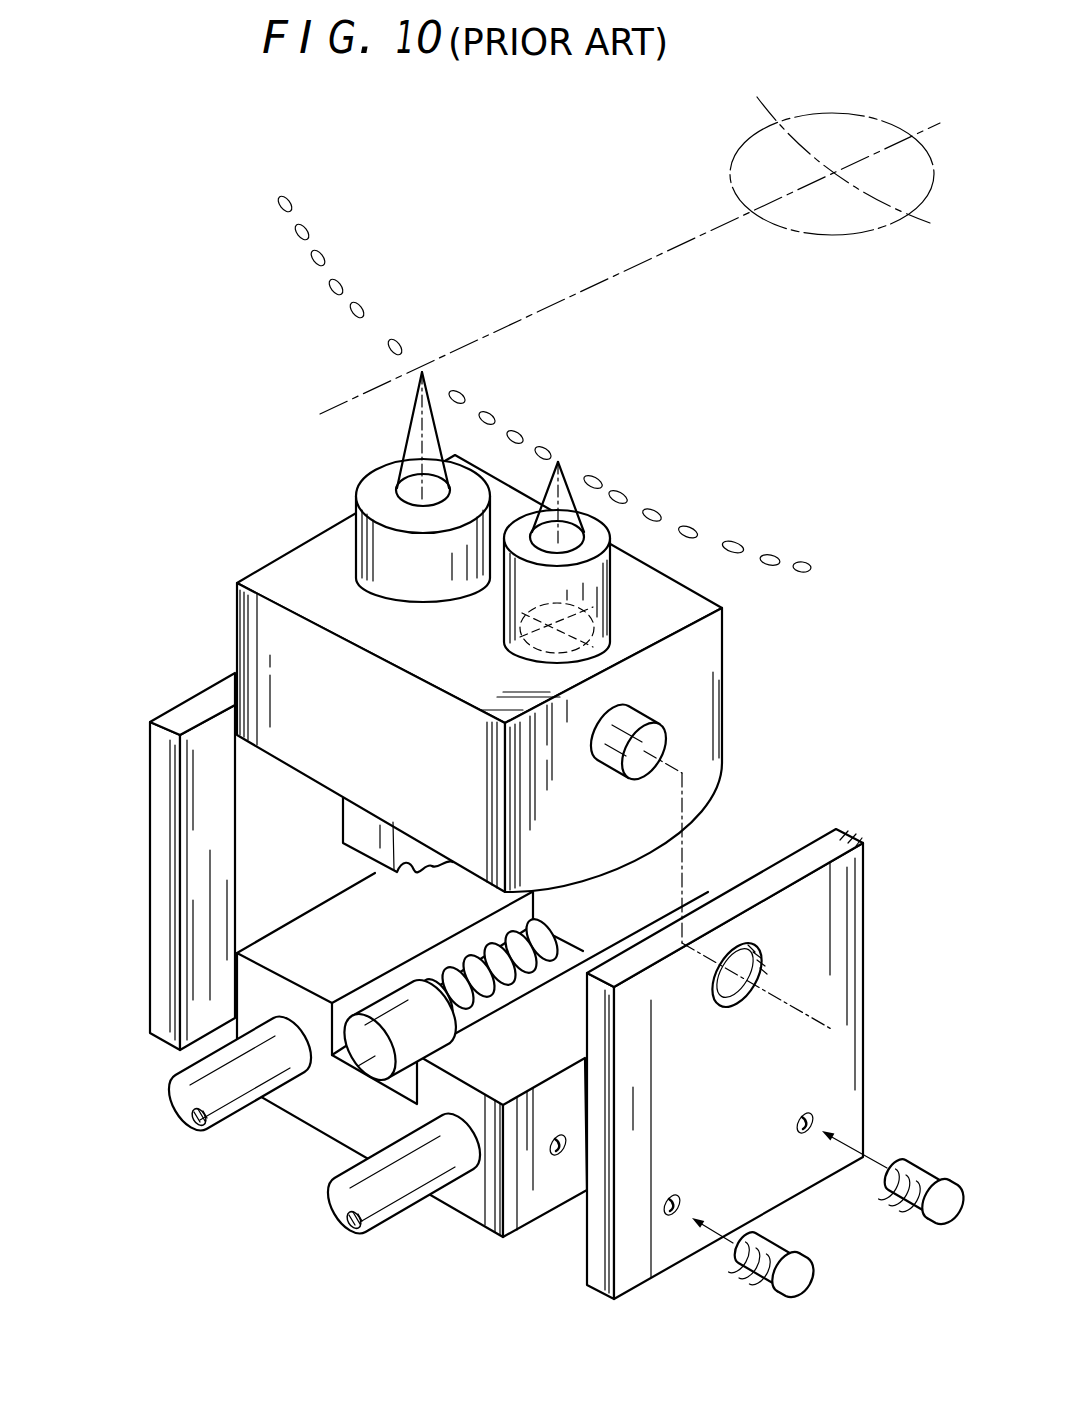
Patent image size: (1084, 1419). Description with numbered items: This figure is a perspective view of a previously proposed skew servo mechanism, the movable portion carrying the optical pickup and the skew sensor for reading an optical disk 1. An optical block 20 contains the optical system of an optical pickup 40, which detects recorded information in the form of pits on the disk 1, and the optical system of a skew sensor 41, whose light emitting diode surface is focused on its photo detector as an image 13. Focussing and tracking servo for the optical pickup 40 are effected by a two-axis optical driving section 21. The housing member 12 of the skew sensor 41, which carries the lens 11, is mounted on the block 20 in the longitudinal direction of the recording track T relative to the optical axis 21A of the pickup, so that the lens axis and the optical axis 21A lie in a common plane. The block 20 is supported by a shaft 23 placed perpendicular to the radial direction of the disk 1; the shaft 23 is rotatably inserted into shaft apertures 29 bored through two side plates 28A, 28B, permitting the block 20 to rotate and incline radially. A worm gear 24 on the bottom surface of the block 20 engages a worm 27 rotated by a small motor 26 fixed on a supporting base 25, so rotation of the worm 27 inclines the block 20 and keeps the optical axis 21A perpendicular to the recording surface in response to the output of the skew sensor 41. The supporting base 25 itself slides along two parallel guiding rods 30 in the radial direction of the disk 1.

The disk 1 is at (413, 205).
The recording track T is at (318, 259).
The optical pickup 40 is at (453, 440).
The image 13 is at (498, 462).
The skew sensor 41 is at (575, 471).
The optical block 20 is at (280, 557).
The two-axis optical driving section 21 is at (417, 586).
The optical axis 21A is at (420, 447).
The housing member 12 is at (610, 585).
The lens 11 is at (605, 528).
The shaft 23 is at (637, 708).
The worm gear 24 is at (343, 823).
The supporting base 25 is at (404, 1104).
The motor 26 is at (178, 1052).
The worm 27 is at (550, 947).
The side plate 28A is at (687, 1247).
The side plate 28B is at (163, 868).
The shaft aperture 29 is at (737, 996).
The guiding rods 30 is at (250, 1093).